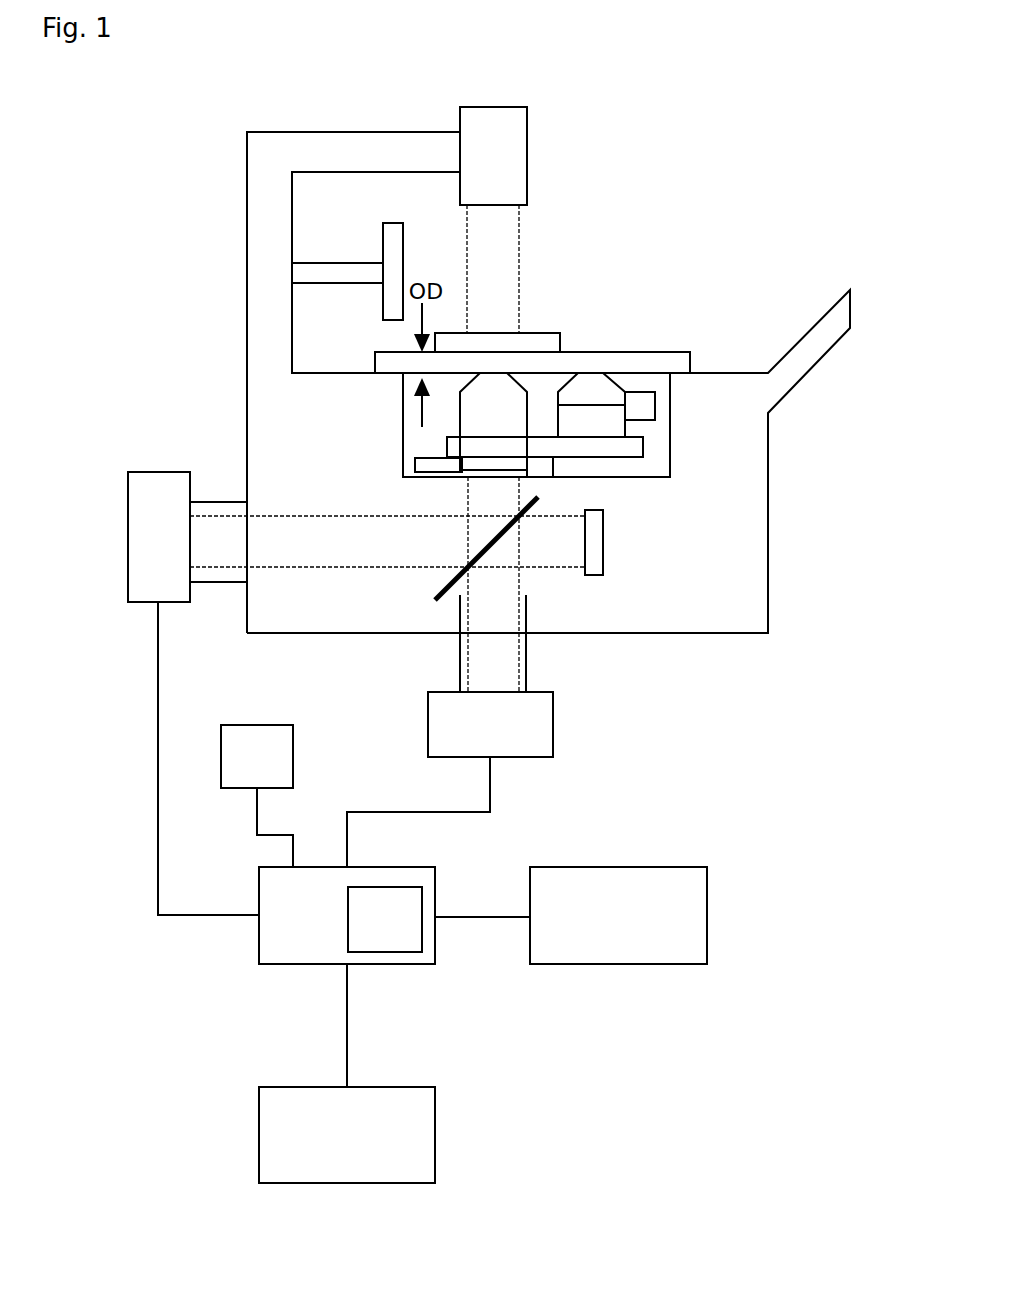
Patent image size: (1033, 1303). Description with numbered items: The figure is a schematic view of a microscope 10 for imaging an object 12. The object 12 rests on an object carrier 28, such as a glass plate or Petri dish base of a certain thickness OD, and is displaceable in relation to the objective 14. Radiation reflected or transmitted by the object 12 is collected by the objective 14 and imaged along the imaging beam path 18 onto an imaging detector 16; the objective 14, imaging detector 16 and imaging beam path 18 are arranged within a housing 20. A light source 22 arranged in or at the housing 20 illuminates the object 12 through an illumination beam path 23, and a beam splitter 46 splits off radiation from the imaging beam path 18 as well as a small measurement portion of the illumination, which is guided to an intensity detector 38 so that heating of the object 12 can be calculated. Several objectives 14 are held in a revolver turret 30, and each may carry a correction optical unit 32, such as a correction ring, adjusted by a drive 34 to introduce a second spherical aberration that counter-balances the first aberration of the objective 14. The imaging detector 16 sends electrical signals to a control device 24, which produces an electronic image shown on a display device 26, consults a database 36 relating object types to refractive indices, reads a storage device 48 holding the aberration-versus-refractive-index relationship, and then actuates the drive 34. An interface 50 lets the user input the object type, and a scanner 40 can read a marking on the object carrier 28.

The microscope 10 is at (218, 208).
The object 12 is at (525, 397).
The objective 14 is at (535, 343).
The imaging detector 16 is at (175, 472).
The imaging beam path 18 is at (292, 513).
The housing 20 is at (728, 595).
The light source 22 is at (482, 126).
The illumination beam path 23 is at (467, 658).
The control device 24 is at (300, 952).
The display device 26 is at (680, 905).
The object carrier 28 is at (598, 368).
The revolver turret 30 is at (647, 460).
The correction optical unit 32 is at (620, 396).
The drive 34 is at (418, 458).
The database 36 is at (408, 1127).
The intensity detector 38 is at (597, 562).
The scanner 40 is at (392, 226).
The beam splitter 46 is at (507, 533).
The storage device 48 is at (395, 932).
The interface 50 is at (252, 743).